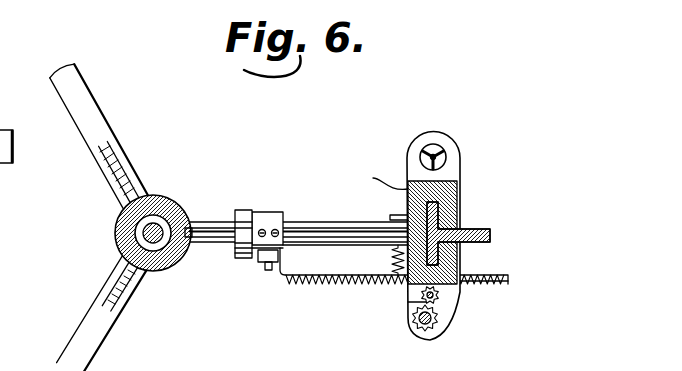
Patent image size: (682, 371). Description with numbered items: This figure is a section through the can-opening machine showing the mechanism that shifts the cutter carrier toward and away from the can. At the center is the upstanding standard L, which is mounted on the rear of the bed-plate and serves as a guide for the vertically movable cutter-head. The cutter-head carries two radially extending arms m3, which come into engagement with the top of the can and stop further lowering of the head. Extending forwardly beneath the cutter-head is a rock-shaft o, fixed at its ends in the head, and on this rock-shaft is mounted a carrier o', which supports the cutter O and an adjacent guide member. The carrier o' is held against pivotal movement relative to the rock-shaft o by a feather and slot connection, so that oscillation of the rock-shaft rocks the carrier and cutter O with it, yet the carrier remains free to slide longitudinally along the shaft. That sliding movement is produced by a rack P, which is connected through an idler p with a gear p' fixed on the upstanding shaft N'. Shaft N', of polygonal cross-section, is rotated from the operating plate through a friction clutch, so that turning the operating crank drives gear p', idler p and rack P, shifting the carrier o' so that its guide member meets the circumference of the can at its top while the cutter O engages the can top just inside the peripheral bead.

The radially extending arms m3 is at (88, 101).
The rock-shaft o is at (296, 217).
The carrier o' is at (267, 219).
The cutter O is at (250, 260).
The rack P is at (353, 282).
The standard L is at (478, 228).
The idler p is at (459, 301).
The shaft N' is at (429, 244).
The gear p' is at (416, 338).